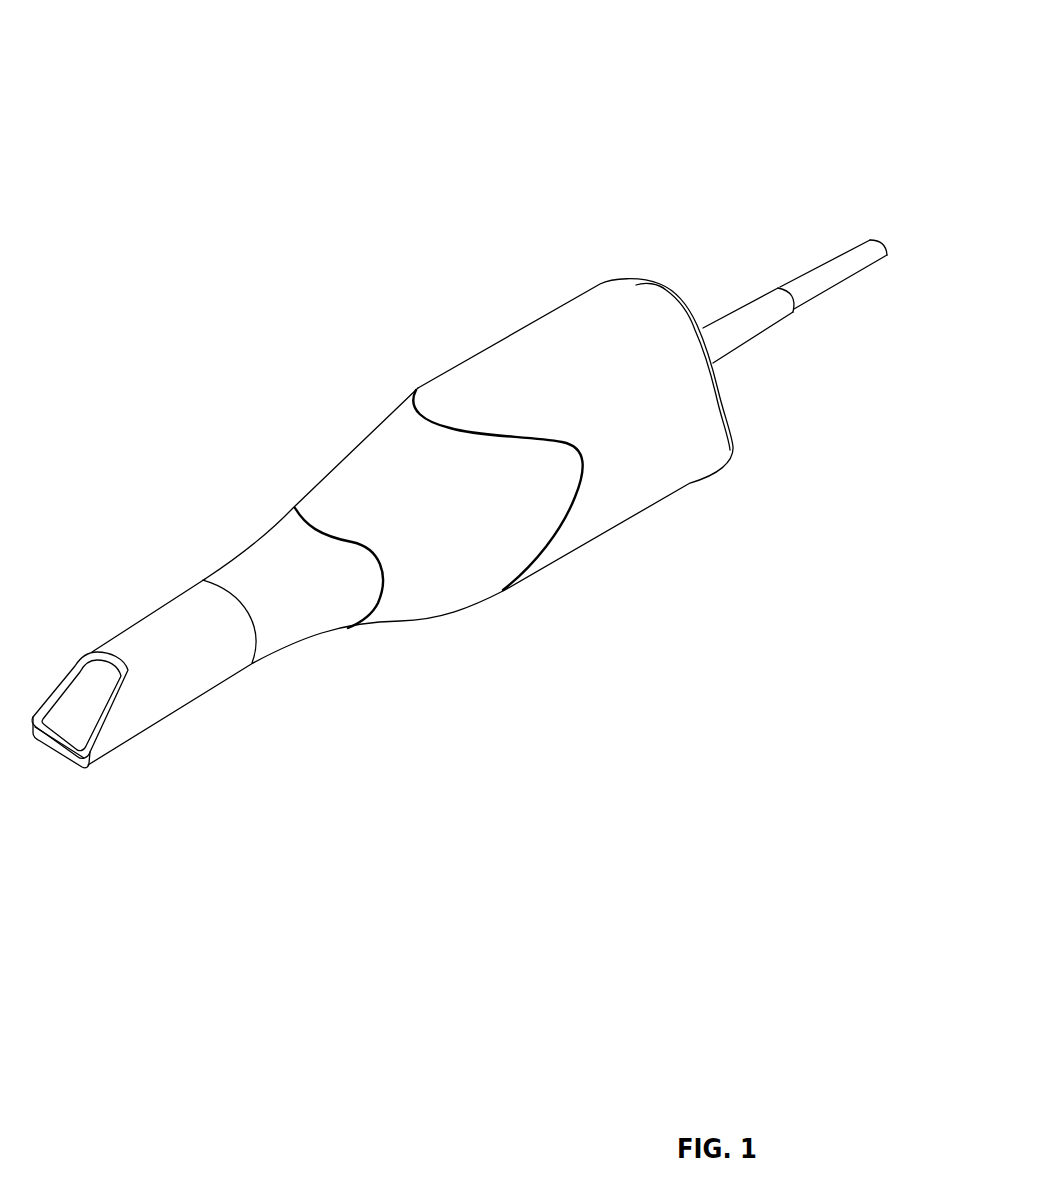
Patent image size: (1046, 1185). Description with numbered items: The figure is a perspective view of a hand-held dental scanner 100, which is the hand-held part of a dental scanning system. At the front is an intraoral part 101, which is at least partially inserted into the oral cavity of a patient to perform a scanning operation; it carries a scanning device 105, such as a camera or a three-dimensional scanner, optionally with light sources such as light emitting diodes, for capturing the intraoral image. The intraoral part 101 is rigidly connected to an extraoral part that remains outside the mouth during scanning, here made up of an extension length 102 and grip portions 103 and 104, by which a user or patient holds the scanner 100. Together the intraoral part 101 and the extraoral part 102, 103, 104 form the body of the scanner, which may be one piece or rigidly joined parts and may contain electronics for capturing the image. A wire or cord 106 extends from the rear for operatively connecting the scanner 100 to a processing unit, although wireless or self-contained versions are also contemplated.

The hand-held dental scanner 100 is at (285, 228).
The intraoral part 101 is at (178, 690).
The extension length 102 is at (345, 617).
The grip portion 103 is at (493, 580).
The grip portion 104 is at (508, 353).
The scanning device 105 is at (75, 702).
The wire or cord 106 is at (762, 323).